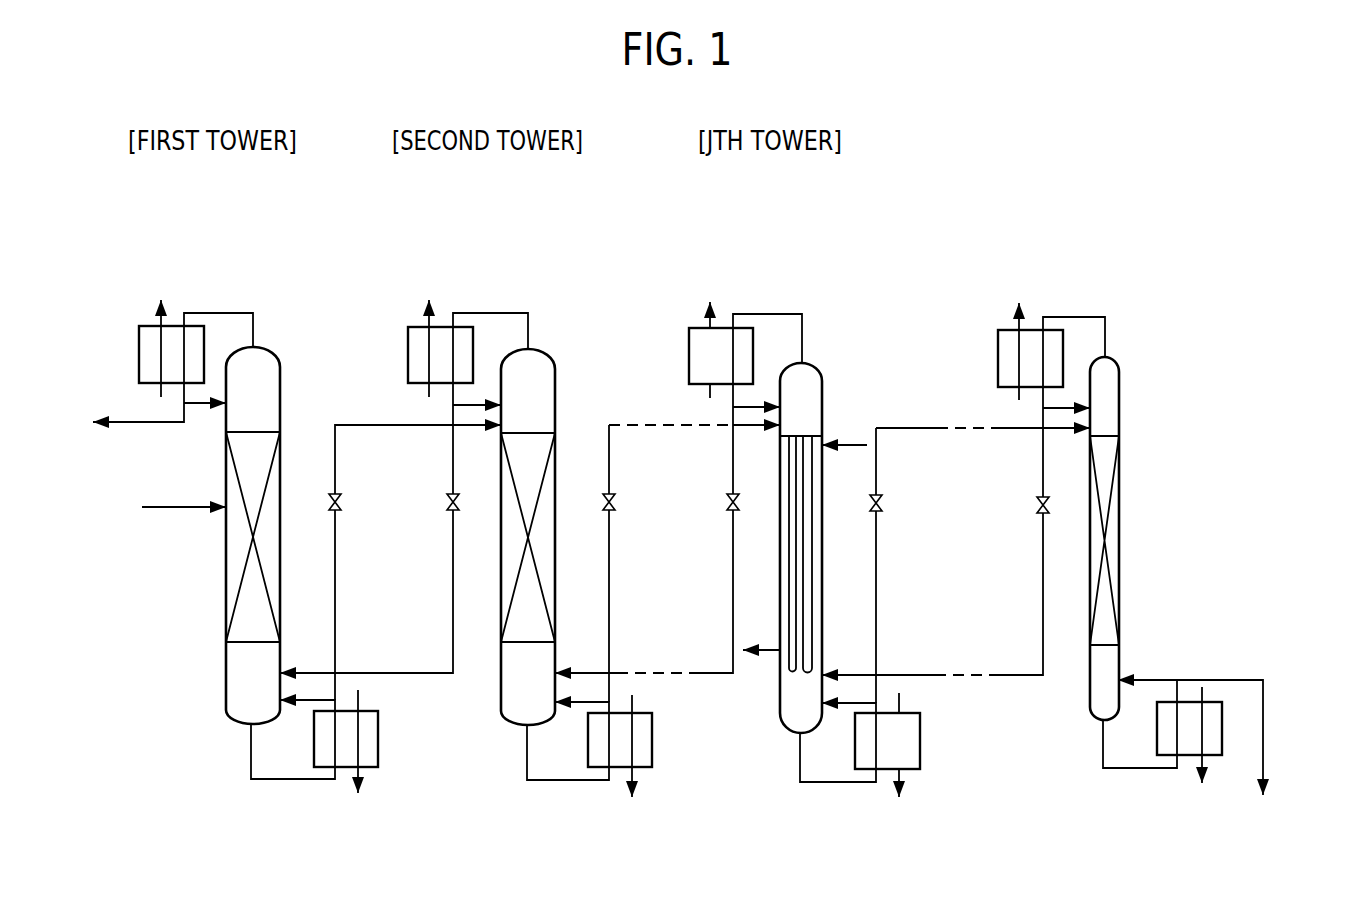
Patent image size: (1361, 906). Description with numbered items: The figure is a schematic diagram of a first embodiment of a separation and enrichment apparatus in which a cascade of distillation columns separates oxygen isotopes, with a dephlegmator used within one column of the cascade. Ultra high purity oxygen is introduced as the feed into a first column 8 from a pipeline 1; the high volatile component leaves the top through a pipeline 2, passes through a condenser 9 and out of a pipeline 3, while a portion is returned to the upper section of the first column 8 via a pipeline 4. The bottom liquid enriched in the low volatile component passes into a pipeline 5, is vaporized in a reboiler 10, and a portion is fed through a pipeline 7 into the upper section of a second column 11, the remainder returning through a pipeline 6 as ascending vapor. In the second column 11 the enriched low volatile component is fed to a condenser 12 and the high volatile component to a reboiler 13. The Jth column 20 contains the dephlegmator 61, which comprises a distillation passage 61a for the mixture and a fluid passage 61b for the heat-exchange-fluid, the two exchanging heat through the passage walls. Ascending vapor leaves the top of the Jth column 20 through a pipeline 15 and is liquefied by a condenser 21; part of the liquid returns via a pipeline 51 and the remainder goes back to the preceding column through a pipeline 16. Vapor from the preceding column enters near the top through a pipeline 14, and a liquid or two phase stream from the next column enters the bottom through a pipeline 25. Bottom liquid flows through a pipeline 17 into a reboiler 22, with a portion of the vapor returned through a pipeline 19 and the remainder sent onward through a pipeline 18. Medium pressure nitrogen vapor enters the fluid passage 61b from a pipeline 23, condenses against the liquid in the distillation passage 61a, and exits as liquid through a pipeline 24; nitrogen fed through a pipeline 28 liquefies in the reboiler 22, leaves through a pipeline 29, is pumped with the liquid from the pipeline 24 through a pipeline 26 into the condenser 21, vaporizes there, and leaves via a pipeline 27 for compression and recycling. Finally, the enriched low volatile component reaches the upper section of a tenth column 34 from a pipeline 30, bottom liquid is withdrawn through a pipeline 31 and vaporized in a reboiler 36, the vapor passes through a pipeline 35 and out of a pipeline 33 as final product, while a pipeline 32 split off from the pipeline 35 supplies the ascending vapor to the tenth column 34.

The pipeline 1 is at (185, 508).
The pipeline 2 is at (217, 315).
The pipeline 3 is at (133, 420).
The pipeline 4 is at (192, 408).
The pipeline 5 is at (275, 782).
The pipeline 6 is at (317, 698).
The pipeline 7 is at (337, 593).
The first column 8 is at (268, 347).
The condenser 9 is at (138, 335).
The reboiler 10 is at (378, 757).
The second column 11 is at (543, 348).
The condenser 12 is at (408, 327).
The reboiler 13 is at (645, 770).
The pipeline 14 is at (720, 428).
The pipeline 15 is at (790, 313).
The pipeline 16 is at (727, 542).
The pipeline 17 is at (822, 785).
The pipeline 18 is at (878, 618).
The pipeline 19 is at (860, 703).
The Jth column 20 is at (817, 367).
The condenser 21 is at (692, 328).
The reboiler 22 is at (920, 753).
The pipeline 23 is at (853, 442).
The pipeline 24 is at (770, 650).
The pipeline 25 is at (897, 675).
The pipeline 26 is at (707, 390).
The pipeline 27 is at (722, 303).
The pipeline 28 is at (902, 702).
The pipeline 29 is at (907, 787).
The pipeline 30 is at (1012, 430).
The pipeline 31 is at (1143, 770).
The pipeline 32 is at (1163, 675).
The pipeline 33 is at (1237, 677).
The tenth column 34 is at (1119, 403).
The pipeline 35 is at (1178, 687).
The reboiler 36 is at (1225, 732).
The pipeline 51 is at (742, 402).
The dephlegmator 61 is at (797, 509).
The distillation passage 61a is at (807, 590).
The fluid passage 61b is at (817, 563).